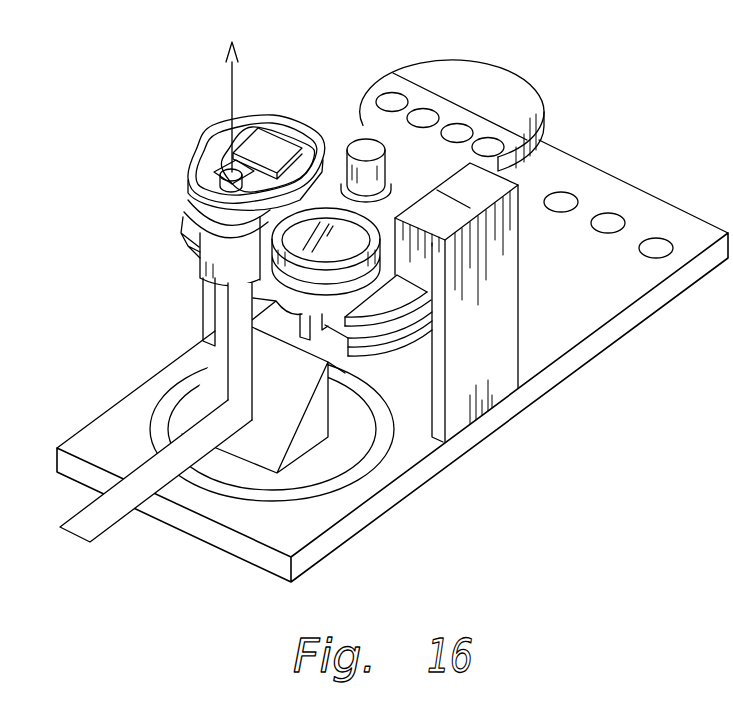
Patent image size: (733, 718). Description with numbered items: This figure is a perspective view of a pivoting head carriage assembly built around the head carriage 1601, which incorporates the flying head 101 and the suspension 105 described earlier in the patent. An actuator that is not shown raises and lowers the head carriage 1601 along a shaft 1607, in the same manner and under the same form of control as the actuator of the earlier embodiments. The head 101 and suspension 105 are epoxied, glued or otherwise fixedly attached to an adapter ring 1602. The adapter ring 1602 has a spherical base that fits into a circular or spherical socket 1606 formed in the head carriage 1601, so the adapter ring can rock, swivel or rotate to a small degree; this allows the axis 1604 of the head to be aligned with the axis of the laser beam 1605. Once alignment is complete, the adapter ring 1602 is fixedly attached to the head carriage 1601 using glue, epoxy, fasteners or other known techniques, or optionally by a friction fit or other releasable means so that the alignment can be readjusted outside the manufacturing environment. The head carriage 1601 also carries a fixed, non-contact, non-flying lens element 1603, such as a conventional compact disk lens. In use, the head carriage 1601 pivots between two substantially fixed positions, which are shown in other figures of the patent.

The head carriage 1601 is at (566, 86).
The adapter ring 1602 is at (203, 202).
The lens element 1603 is at (332, 300).
The axis of the head 1604 is at (247, 133).
The laser beam 1605 is at (238, 320).
The socket 1606 is at (217, 263).
The shaft 1607 is at (360, 142).
The flying head 101 is at (277, 150).
The suspension 105 is at (233, 143).